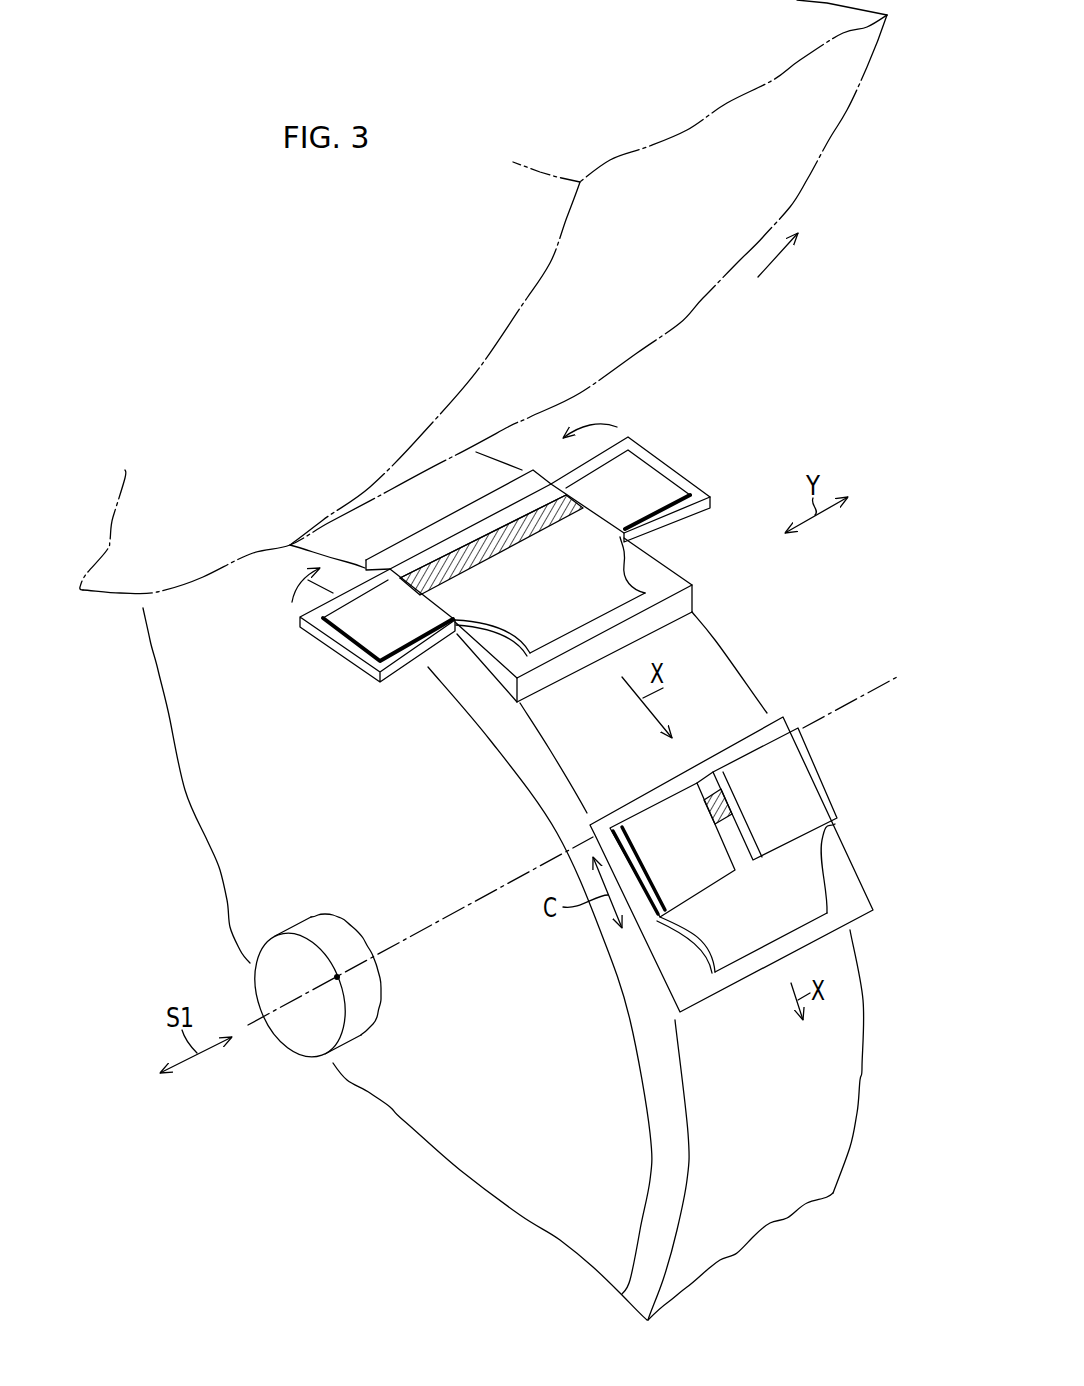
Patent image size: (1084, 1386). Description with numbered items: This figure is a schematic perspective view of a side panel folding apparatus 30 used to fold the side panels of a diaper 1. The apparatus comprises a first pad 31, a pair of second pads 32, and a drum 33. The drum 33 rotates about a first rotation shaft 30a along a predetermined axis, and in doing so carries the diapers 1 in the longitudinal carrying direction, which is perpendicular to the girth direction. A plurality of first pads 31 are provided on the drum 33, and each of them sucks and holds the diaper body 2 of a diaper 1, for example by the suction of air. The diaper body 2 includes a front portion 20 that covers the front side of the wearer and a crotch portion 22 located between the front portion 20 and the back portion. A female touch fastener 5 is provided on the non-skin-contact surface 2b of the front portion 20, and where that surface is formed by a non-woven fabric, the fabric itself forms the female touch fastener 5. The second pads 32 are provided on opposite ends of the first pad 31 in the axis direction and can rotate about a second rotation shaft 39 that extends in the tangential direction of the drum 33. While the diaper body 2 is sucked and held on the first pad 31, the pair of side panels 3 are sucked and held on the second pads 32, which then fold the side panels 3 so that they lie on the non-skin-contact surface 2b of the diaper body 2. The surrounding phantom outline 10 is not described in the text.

The diaper 1 is at (603, 573).
The diaper body 2 is at (530, 502).
The non-skin-contact surface 2b is at (519, 588).
The side panel 3 is at (640, 467).
The female touch fastener 5 is at (512, 524).
The housing 10 is at (808, 178).
The front portion 20 is at (459, 541).
The crotch portion 22 is at (553, 620).
The side panel folding apparatus 30 is at (825, 625).
The first rotation shaft 30a is at (307, 935).
The first pad 31 is at (510, 658).
The second pad 32 is at (679, 464).
The drum 33 is at (718, 677).
The second rotation shaft 39 is at (455, 630).